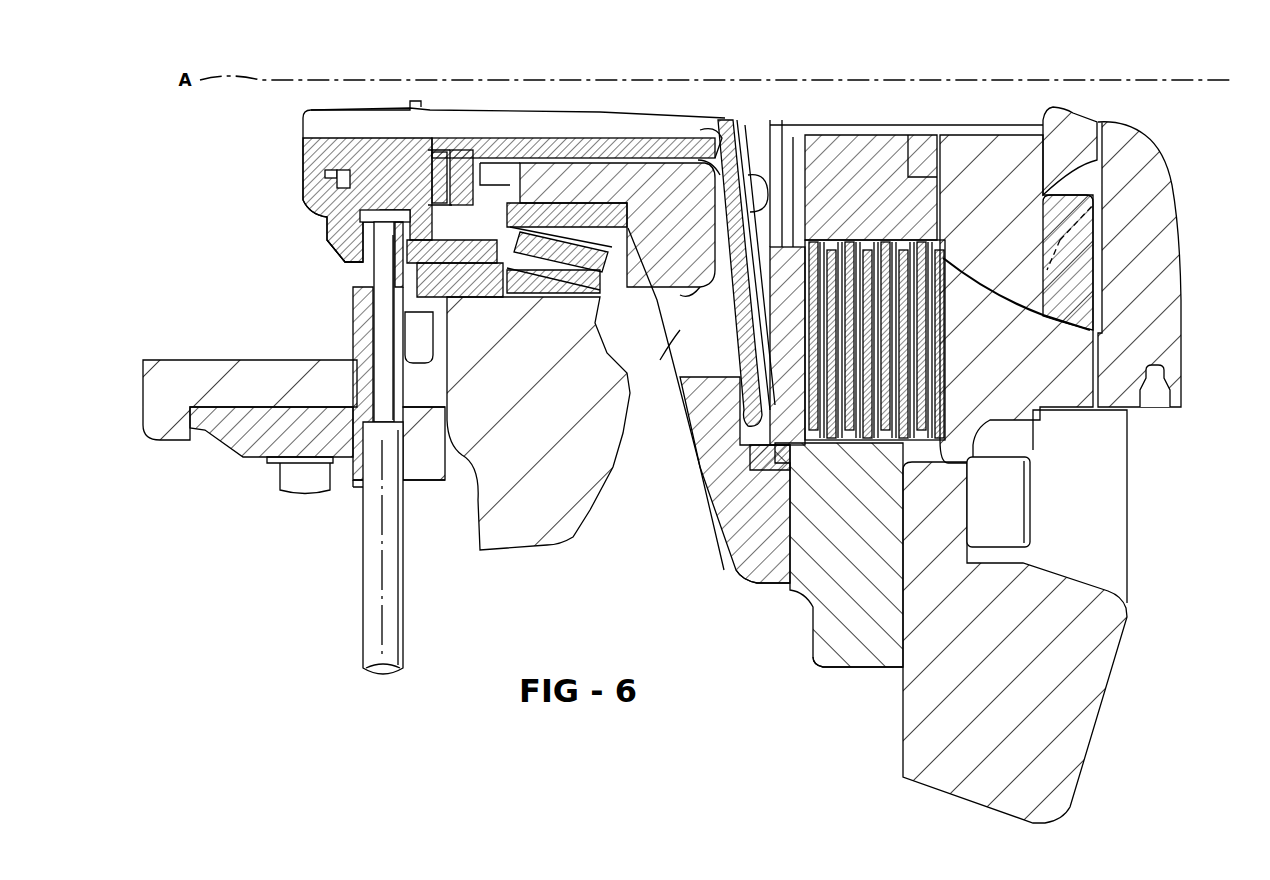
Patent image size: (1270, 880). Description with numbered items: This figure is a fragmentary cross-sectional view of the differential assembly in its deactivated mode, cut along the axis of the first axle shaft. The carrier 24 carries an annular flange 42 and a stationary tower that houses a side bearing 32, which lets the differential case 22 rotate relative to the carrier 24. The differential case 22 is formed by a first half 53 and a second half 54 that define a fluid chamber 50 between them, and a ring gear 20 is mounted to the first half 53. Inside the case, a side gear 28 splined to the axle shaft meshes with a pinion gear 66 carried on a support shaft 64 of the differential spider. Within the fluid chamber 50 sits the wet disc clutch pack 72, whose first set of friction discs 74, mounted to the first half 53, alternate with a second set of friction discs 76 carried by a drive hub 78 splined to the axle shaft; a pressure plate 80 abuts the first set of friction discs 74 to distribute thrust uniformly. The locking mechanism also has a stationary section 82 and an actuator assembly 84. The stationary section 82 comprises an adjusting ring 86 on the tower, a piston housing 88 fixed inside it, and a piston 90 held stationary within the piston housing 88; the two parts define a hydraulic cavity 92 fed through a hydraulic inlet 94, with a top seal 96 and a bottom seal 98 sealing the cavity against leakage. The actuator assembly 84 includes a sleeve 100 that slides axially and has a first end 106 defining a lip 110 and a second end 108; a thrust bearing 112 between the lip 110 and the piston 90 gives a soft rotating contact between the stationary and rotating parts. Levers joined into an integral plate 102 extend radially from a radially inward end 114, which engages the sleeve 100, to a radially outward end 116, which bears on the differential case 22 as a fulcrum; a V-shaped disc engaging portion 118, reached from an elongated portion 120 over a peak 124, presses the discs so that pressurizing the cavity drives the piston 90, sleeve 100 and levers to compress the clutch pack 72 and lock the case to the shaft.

The ring gear 20 is at (1093, 745).
The differential case 22 is at (792, 590).
The carrier 24 is at (572, 545).
The side gear 28 is at (975, 155).
The side bearing 32 is at (557, 248).
The annular flange 42 is at (185, 360).
The fluid chamber 50 is at (702, 488).
The first half 53 is at (835, 668).
The second half 54 is at (730, 578).
The support shaft 64 is at (1172, 395).
The pinion gear 66 is at (1078, 216).
The wet disc clutch pack 72 is at (925, 343).
The first set of friction discs 74 is at (912, 448).
The second set of friction discs 76 is at (867, 240).
The drive hub 78 is at (875, 135).
The pressure plate 80 is at (778, 470).
The stationary section 82 is at (301, 106).
The actuator assembly 84 is at (576, 139).
The adjusting ring 86 is at (485, 328).
The piston housing 88 is at (314, 204).
The piston 90 is at (360, 138).
The hydraulic cavity 92 is at (336, 223).
The hydraulic inlet 94 is at (362, 540).
The top seal 96 is at (337, 178).
The bottom seal 98 is at (446, 298).
The sleeve 100 is at (446, 120).
The plate 102 is at (665, 318).
The first end 106 is at (490, 130).
The second end 108 is at (700, 130).
The lip 110 is at (462, 176).
The thrust bearing 112 is at (440, 150).
The radially inward end 114 is at (722, 118).
The radially outward end 116 is at (690, 470).
The disc engaging portion 118 is at (766, 352).
The elongated portion 120 is at (685, 290).
The peak 124 is at (740, 320).